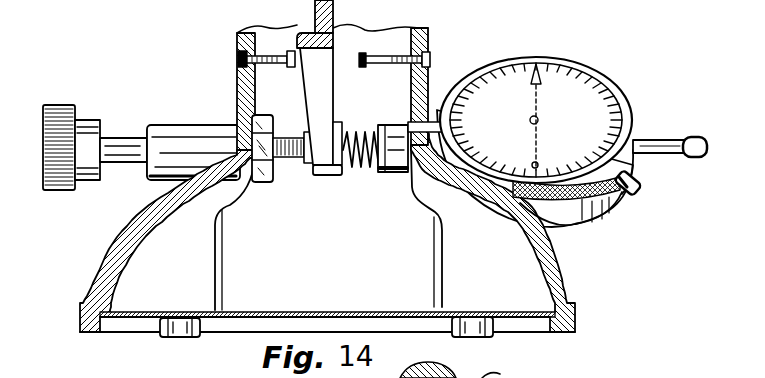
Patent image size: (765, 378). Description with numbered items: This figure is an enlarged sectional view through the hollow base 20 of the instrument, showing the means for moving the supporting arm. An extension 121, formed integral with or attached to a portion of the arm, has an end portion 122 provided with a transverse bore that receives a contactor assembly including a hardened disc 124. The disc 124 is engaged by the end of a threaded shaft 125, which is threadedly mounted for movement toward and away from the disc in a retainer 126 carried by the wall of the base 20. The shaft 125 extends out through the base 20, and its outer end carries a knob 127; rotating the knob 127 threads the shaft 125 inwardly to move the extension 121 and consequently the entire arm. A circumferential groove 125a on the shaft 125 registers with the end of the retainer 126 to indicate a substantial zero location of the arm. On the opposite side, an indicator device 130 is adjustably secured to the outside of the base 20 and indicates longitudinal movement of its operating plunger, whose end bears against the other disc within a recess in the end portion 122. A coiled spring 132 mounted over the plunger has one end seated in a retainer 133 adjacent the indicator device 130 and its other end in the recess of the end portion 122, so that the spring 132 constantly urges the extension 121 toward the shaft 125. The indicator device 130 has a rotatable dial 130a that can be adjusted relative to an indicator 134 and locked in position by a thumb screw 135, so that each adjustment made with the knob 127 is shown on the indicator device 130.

The hollow base 20 is at (105, 241).
The extension 121 is at (335, 86).
The portion of the extension 122 is at (330, 176).
The hardened disc 124 is at (312, 165).
The threaded shaft 125 is at (115, 137).
The circumferential groove 125a is at (133, 162).
The retainer 126 is at (180, 125).
The knob 127 is at (74, 118).
The indicator device 130 is at (640, 71).
The rotatable dial 130a is at (583, 88).
The coiled spring 132 is at (354, 171).
The retainer 133 is at (392, 125).
The indicator 134 is at (540, 104).
The thumb screw 135 is at (641, 191).